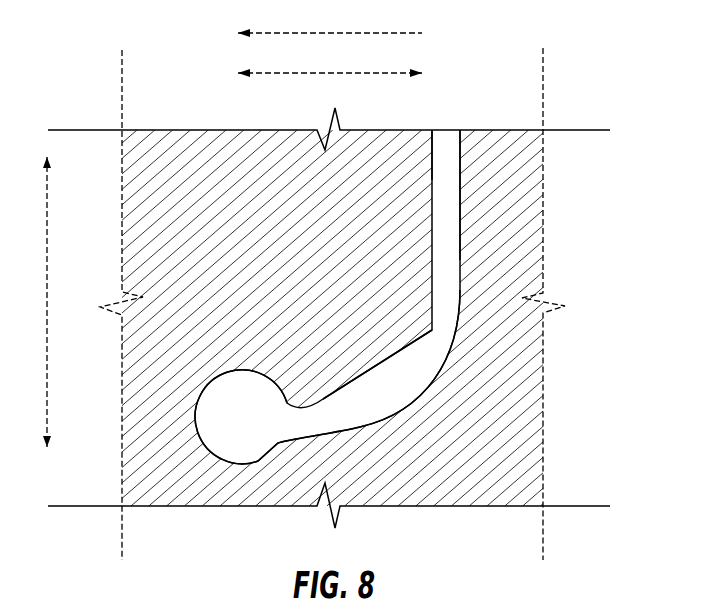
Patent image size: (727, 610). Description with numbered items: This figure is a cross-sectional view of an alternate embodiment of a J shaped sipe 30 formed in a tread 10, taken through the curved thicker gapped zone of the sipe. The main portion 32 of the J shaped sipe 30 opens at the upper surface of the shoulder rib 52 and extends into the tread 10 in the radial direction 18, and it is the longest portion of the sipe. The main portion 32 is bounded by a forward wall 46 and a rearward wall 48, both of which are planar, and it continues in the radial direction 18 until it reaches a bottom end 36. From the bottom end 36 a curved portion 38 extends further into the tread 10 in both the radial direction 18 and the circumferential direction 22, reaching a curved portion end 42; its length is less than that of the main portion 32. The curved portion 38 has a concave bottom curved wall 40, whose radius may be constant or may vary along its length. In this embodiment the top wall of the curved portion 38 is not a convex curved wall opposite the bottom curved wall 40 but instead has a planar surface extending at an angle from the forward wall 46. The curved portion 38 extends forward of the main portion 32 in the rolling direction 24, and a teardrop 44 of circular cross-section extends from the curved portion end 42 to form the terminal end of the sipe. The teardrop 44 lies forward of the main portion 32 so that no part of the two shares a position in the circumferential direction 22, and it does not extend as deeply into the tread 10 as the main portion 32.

The tread 10 is at (573, 107).
The radial direction 18 is at (46, 302).
The circumferential direction 22 is at (330, 76).
The rolling direction 24 is at (328, 33).
The J shaped sipe 30 is at (461, 234).
The main portion 32 is at (455, 217).
The bottom end 36 is at (450, 335).
The curved portion 38 is at (362, 418).
The bottom curved wall 40 is at (413, 400).
The curved portion end 42 is at (302, 432).
The teardrop 44 is at (207, 437).
The forward wall 46 is at (432, 140).
The rearward wall 48 is at (461, 134).
The shoulder rib 52 is at (137, 137).